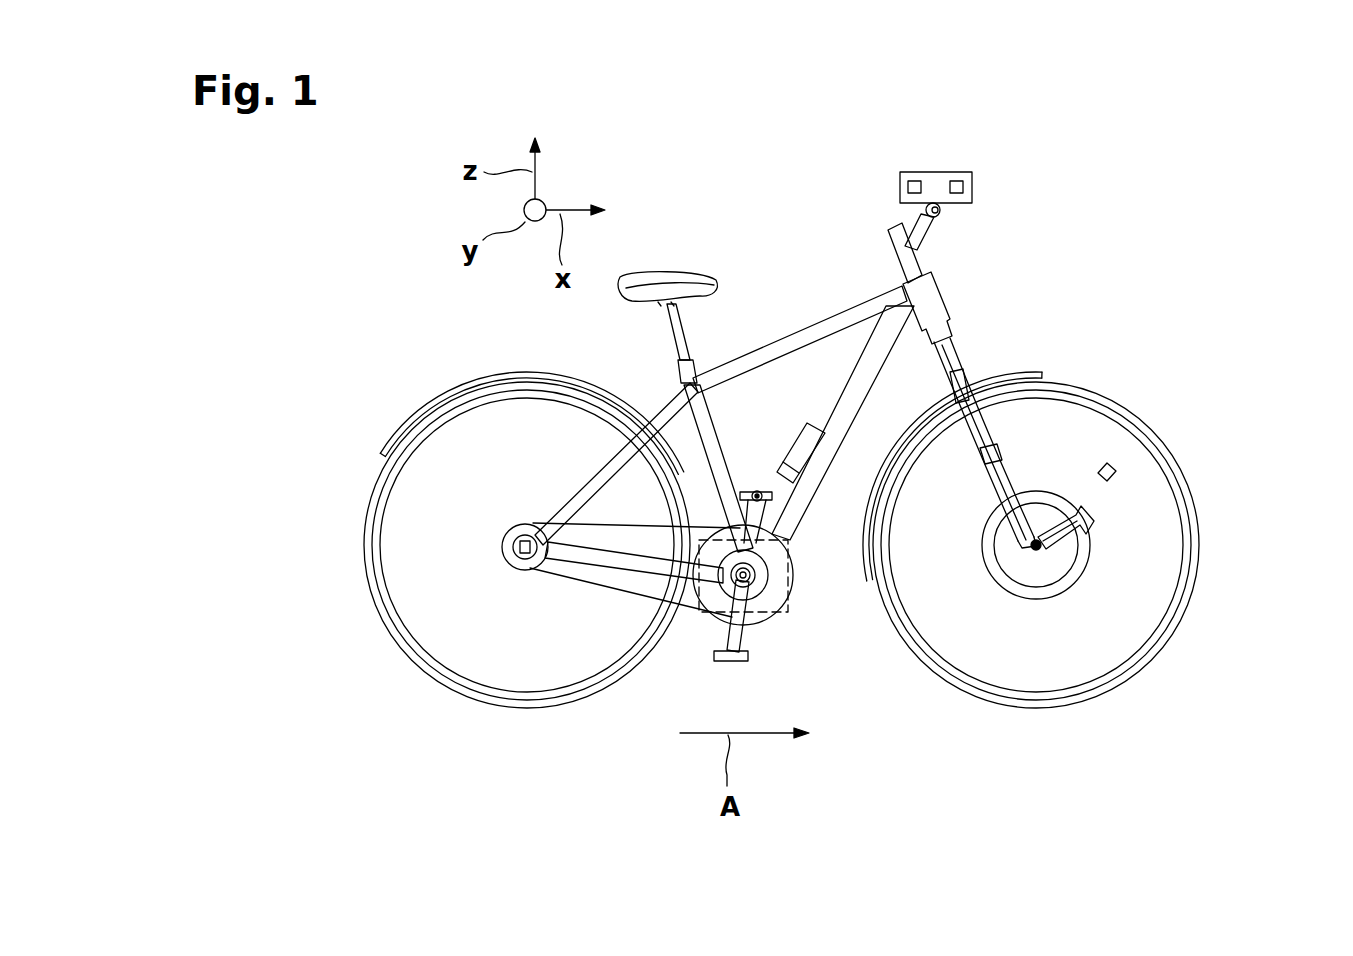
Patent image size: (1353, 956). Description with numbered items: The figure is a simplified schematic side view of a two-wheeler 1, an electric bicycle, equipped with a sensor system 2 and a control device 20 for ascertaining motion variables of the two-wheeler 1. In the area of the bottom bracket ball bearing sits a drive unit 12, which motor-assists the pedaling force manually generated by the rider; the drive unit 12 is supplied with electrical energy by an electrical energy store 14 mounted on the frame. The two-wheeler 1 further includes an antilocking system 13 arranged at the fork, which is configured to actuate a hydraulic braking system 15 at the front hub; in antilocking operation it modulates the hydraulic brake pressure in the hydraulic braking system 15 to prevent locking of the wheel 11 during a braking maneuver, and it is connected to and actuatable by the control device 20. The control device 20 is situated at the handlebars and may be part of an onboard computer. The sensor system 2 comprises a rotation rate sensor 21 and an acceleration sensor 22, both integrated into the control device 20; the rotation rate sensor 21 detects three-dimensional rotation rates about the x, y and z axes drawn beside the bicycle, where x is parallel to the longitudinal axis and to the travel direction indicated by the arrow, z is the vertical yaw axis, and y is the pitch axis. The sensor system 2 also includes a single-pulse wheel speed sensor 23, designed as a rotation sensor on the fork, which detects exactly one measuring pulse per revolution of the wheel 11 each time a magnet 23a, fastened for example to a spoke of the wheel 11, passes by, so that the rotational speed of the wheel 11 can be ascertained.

The two-wheeler 1 is at (352, 248).
The sensor system 2 is at (963, 128).
The wheel 11 is at (1193, 546).
The drive unit 12 is at (804, 612).
The antilocking system 13 is at (966, 382).
The electrical energy store 14 is at (798, 455).
The hydraulic braking system 15 is at (1074, 546).
The control device 20 is at (901, 158).
The rotation rate sensor 21 is at (900, 184).
The acceleration sensor 22 is at (965, 188).
The single-pulse wheel speed sensor 23 is at (998, 447).
The magnet 23a is at (1117, 465).